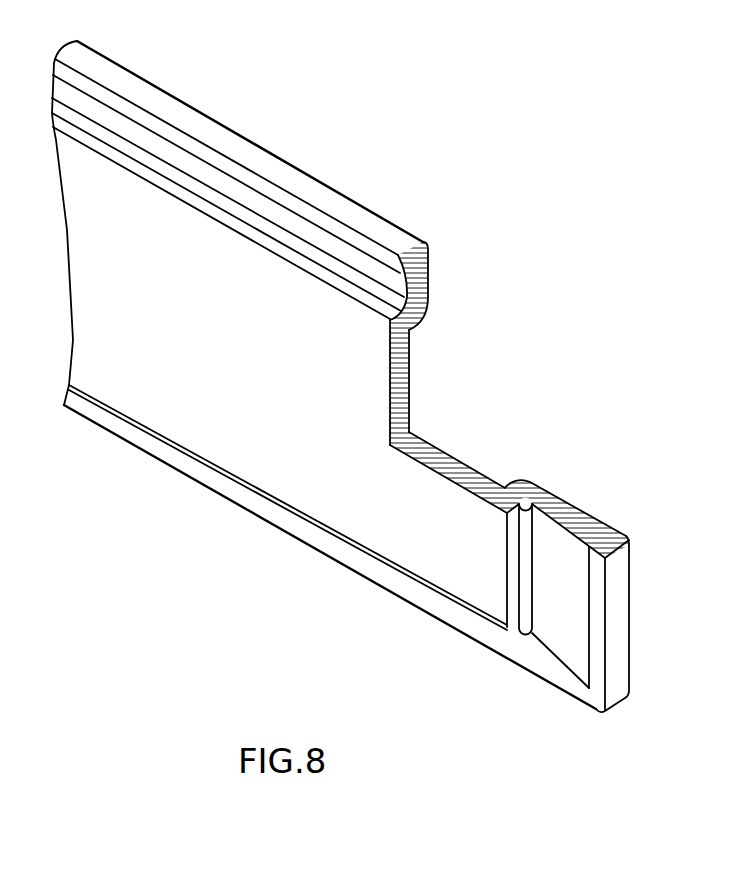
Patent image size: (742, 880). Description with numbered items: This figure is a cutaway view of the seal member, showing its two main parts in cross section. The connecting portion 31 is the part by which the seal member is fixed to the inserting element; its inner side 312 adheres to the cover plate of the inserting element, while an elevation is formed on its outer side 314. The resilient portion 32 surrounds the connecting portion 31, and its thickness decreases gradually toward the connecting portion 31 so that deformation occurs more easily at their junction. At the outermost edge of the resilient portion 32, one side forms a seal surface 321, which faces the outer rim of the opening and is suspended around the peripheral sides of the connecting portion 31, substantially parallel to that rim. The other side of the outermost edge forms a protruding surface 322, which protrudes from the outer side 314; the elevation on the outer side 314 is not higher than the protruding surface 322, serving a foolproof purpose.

The connecting portion 31 is at (400, 388).
The resilient portion 32 is at (417, 280).
The inner side 312 is at (308, 449).
The outer side 314 is at (464, 457).
The seal surface 321 is at (598, 597).
The protruding surface 322 is at (596, 510).